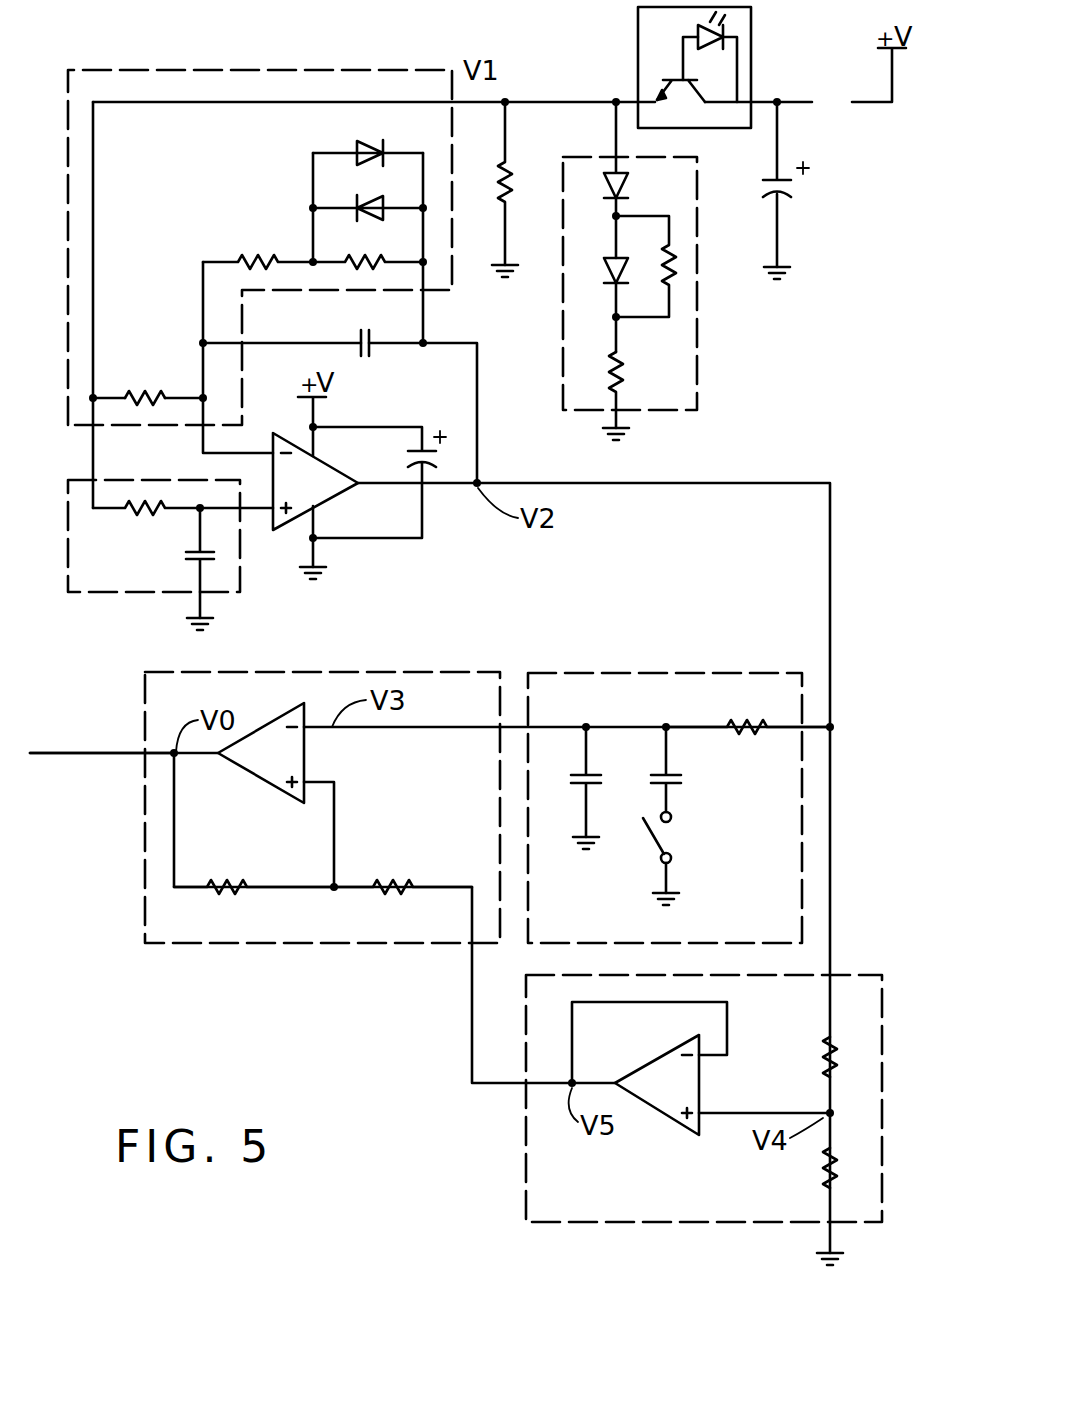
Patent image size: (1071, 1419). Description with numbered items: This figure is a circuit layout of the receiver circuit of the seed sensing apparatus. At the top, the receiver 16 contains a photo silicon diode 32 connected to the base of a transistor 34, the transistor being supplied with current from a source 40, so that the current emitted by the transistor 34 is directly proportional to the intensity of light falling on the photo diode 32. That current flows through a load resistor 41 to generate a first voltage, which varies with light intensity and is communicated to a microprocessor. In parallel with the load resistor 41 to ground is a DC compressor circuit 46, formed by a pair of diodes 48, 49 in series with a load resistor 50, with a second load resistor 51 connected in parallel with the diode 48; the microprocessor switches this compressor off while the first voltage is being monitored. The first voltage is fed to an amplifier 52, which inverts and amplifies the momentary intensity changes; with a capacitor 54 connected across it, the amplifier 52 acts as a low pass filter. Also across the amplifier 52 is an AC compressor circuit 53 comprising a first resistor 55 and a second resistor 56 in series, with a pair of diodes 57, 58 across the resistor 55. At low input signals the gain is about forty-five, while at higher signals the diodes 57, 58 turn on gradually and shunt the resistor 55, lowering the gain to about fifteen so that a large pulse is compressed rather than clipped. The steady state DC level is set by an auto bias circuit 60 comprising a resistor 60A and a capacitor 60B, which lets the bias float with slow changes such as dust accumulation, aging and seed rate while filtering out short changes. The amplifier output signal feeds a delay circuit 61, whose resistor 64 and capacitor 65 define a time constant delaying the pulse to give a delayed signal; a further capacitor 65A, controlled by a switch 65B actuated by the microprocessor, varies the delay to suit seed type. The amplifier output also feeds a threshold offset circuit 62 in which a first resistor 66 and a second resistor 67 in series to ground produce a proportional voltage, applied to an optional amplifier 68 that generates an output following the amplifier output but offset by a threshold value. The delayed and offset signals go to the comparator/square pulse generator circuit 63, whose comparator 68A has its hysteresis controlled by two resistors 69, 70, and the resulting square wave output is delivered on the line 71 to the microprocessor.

The receiver 16 is at (635, 24).
The photo silicon diode 32 is at (738, 24).
The transistor 34 is at (662, 70).
The source 40 is at (830, 140).
The load resistor 41 is at (518, 166).
The DC compressor circuit 46 is at (704, 355).
The diode 48 is at (598, 284).
The diode 49 is at (645, 180).
The load resistor 50 is at (625, 362).
The second load resistor 51 is at (683, 268).
The amplifier 52 is at (335, 493).
The AC compressor circuit 53 is at (224, 60).
The capacitor 54 is at (374, 356).
The first resistor 55 is at (366, 272).
The second resistor 56 is at (258, 258).
The diode 57 is at (355, 198).
The diode 58 is at (372, 150).
The auto bias circuit 60 is at (128, 606).
The resistor 60A is at (146, 516).
The capacitor 60B is at (220, 565).
The delay circuit 61 is at (683, 668).
The threshold offset circuit 62 is at (522, 1168).
The comparator/square pulse generator circuit 63 is at (224, 950).
The resistor 64 is at (742, 724).
The capacitor 65 is at (592, 756).
The further capacitor 65A is at (684, 778).
The switch 65B is at (670, 830).
The first resistor 66 is at (818, 1062).
The second resistor 67 is at (816, 1168).
The amplifier 68 is at (668, 1120).
The comparator 68A is at (266, 775).
The resistor 69 is at (237, 880).
The resistor 70 is at (388, 880).
The line 71 is at (52, 758).